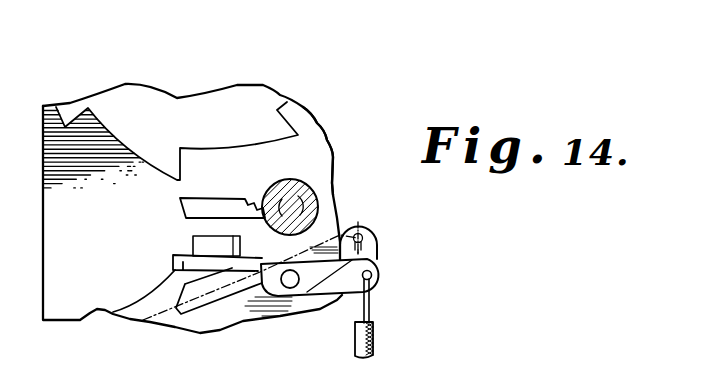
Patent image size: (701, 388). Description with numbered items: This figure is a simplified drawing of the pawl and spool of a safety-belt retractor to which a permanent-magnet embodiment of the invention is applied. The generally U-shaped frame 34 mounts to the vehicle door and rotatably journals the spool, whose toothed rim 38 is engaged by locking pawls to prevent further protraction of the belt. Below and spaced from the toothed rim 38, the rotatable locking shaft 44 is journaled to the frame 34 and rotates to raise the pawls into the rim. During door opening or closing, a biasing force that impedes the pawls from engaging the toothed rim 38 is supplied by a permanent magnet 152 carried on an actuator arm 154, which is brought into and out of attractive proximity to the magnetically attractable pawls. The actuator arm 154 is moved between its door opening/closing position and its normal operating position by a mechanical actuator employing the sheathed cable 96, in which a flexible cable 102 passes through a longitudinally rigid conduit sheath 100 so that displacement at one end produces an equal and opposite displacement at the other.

The toothed rim 38 is at (165, 112).
The frame 34 is at (307, 125).
The rotatable locking shaft 44 is at (312, 196).
The permanent magnet 152 is at (197, 245).
The actuator arm 154 is at (132, 323).
The flexible cable 102 is at (371, 301).
The conduit sheath 100 is at (375, 321).
The sheathed cable 96 is at (375, 350).